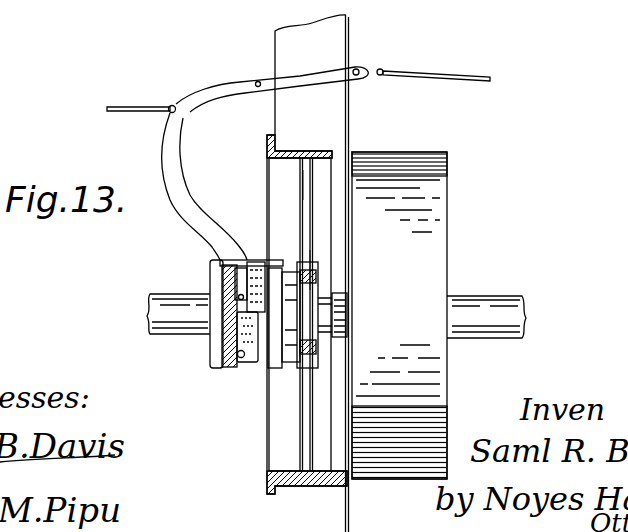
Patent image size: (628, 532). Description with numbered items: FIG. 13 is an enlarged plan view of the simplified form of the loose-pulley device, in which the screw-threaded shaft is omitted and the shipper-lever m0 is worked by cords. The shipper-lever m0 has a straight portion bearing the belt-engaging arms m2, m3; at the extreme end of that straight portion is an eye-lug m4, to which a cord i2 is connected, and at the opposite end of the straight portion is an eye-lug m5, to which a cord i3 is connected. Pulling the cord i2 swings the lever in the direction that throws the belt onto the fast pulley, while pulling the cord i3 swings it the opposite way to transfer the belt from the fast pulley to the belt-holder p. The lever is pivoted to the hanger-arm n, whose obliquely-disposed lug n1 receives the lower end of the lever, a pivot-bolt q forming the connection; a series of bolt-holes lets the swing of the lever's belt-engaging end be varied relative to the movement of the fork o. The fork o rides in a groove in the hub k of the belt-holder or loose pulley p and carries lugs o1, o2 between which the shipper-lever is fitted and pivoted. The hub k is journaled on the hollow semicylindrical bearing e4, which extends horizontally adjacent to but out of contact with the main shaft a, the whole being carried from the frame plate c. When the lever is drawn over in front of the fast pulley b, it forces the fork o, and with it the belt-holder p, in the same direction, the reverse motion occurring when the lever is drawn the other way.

The frame plate c is at (283, 110).
The belt-holder or loose pulley p is at (277, 448).
The lug o2 is at (265, 259).
The wheel b is at (447, 205).
The shaft a is at (490, 300).
The belt-engaging arm m2 is at (257, 82).
The shipper-lever m0 is at (162, 148).
The eye-lug m5 is at (178, 106).
The belt-engaging arm m3 is at (359, 68).
The eye-lug m4 is at (382, 69).
The cord i3 is at (126, 107).
The cord i2 is at (452, 74).
The hanger-arm n is at (240, 346).
The lug n1 is at (243, 366).
The pivot-bolt q is at (243, 358).
The lug o1 is at (246, 262).
The fork o is at (288, 258).
The hub k is at (350, 300).
The hollow semicylindrical bearing e4 is at (350, 326).